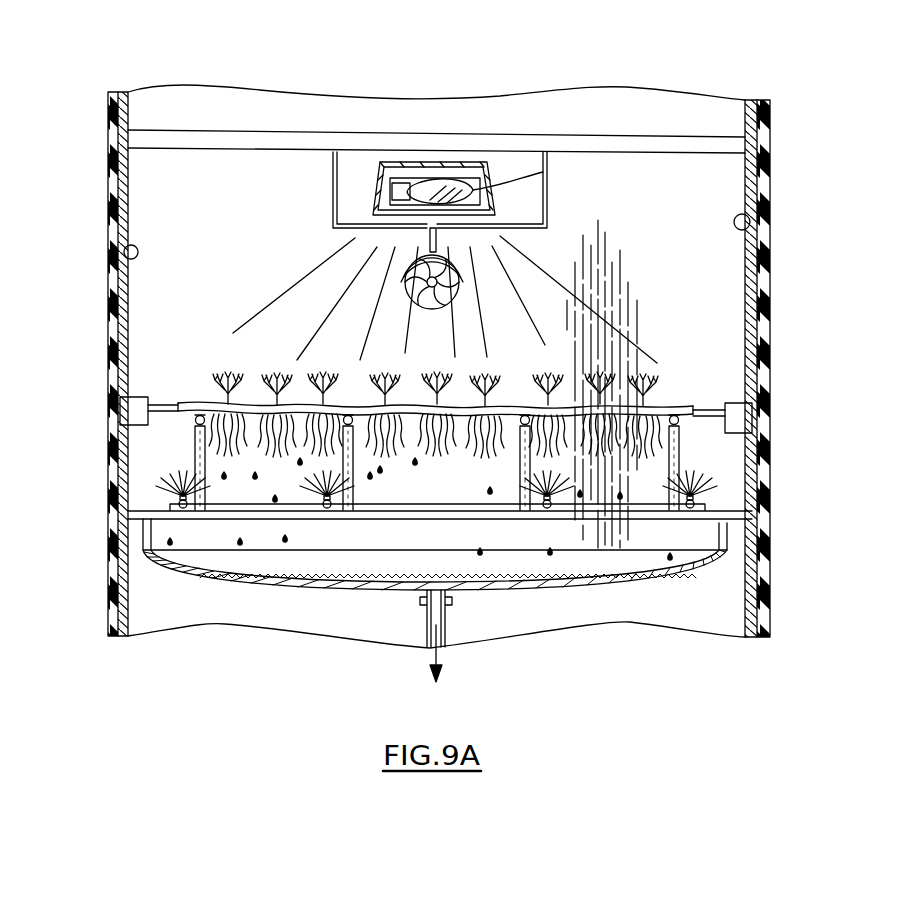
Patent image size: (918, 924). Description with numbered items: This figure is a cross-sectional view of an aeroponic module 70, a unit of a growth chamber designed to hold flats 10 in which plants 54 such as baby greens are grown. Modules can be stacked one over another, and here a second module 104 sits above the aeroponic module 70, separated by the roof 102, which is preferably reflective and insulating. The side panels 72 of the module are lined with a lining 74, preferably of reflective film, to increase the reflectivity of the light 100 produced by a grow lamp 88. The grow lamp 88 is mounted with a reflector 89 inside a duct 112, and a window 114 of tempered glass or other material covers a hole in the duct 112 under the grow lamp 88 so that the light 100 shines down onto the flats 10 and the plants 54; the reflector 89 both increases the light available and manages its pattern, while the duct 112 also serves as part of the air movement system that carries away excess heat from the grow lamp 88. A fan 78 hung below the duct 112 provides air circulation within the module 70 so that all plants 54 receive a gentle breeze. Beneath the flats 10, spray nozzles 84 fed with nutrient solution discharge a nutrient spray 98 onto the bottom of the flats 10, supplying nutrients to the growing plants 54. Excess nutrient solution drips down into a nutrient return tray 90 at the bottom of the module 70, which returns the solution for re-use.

The aeroponic module 70 is at (490, 72).
The module 104 is at (703, 86).
The roof 102 is at (575, 132).
The reflector 89 is at (385, 178).
The window 114 is at (357, 220).
The duct 112 is at (335, 228).
The grow lamp 88 is at (545, 175).
The light 100 is at (284, 296).
The fan 78 is at (455, 292).
The plants 54 is at (222, 385).
The flat 10 is at (672, 405).
The lining 74 is at (124, 253).
The side panel 72 is at (109, 300).
The nutrient spray 98 is at (170, 478).
The spray nozzle 84 is at (700, 499).
The nutrient return tray 90 is at (288, 590).